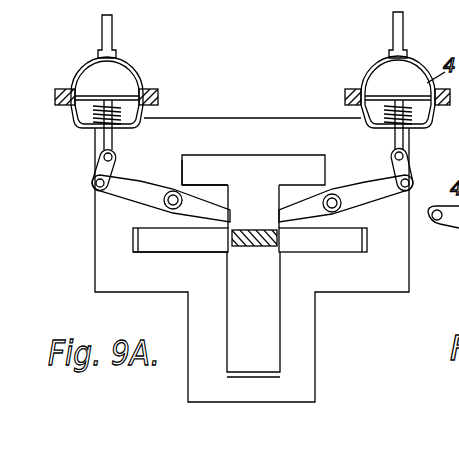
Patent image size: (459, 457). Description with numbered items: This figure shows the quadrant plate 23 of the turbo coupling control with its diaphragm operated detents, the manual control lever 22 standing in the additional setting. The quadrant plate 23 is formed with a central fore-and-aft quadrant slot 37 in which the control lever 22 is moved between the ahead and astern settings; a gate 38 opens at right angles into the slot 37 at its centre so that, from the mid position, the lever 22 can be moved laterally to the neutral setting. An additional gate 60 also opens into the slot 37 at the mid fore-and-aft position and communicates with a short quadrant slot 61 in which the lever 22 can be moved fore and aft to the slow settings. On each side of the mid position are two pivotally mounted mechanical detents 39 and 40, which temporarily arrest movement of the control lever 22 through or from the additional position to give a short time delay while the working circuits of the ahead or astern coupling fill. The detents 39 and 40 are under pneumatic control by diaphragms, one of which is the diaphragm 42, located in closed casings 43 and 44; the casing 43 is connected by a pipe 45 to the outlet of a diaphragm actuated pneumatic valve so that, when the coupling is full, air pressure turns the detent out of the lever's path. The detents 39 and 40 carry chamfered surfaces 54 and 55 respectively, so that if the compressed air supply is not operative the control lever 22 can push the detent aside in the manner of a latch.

The manual control lever 22 is at (250, 230).
The quadrant plate 23 is at (403, 278).
The quadrant slot 37 is at (191, 247).
The gate 38 is at (262, 336).
The mechanical detent 39 is at (358, 188).
The mechanical detent 40 is at (122, 195).
The diaphragm 42 is at (132, 80).
The closed casing 43 is at (365, 78).
The closed casing 44 is at (123, 63).
The pipe 45 is at (402, 28).
The chamfered surface 54 is at (314, 222).
The chamfered surface 55 is at (190, 223).
The additional gate 60 is at (253, 182).
The short quadrant slot 61 is at (190, 165).